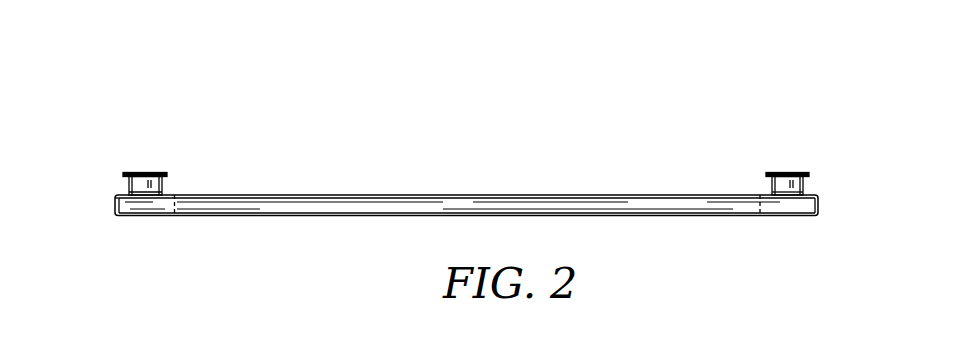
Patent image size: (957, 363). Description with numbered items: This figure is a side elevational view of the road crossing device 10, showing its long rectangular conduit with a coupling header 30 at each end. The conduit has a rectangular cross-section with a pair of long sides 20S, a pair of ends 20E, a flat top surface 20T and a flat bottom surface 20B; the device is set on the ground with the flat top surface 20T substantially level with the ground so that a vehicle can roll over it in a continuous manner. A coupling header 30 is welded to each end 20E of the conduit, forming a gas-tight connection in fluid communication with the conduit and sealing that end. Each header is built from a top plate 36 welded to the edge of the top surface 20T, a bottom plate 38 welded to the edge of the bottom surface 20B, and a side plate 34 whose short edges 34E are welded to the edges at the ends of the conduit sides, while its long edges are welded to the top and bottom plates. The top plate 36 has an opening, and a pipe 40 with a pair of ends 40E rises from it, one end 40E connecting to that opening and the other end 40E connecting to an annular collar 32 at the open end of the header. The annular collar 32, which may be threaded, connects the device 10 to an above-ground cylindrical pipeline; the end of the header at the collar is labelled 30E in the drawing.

The road crossing device 10 is at (436, 104).
The long sides of the conduit 20S is at (343, 210).
The flat top surface 20T is at (588, 194).
The flat bottom surface 20B is at (563, 215).
The ends of the conduit 20E is at (760, 210).
The coupling header 30 is at (818, 158).
The end of connector post 30E is at (145, 172).
The annular collar 32 is at (167, 172).
The side plate 34 is at (818, 207).
The short edges of the side plate 34E is at (116, 216).
The top plate 36 is at (115, 196).
The bottom plate 38 is at (140, 217).
The pipe 40 is at (771, 183).
The ends of the pipe 40E is at (124, 177).